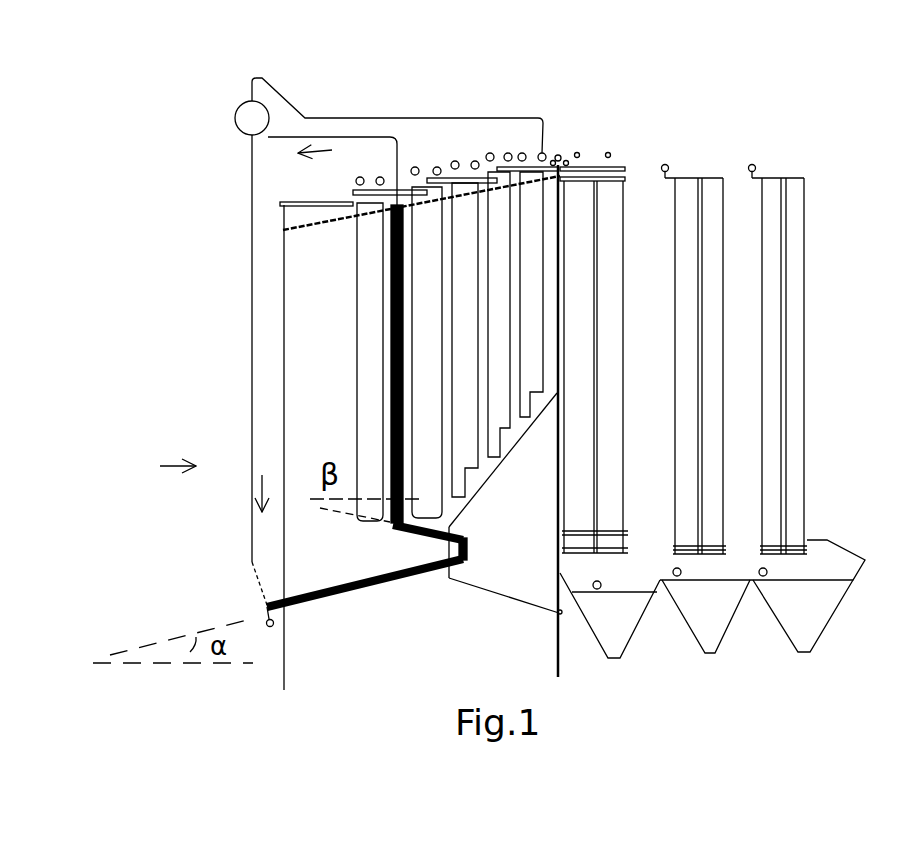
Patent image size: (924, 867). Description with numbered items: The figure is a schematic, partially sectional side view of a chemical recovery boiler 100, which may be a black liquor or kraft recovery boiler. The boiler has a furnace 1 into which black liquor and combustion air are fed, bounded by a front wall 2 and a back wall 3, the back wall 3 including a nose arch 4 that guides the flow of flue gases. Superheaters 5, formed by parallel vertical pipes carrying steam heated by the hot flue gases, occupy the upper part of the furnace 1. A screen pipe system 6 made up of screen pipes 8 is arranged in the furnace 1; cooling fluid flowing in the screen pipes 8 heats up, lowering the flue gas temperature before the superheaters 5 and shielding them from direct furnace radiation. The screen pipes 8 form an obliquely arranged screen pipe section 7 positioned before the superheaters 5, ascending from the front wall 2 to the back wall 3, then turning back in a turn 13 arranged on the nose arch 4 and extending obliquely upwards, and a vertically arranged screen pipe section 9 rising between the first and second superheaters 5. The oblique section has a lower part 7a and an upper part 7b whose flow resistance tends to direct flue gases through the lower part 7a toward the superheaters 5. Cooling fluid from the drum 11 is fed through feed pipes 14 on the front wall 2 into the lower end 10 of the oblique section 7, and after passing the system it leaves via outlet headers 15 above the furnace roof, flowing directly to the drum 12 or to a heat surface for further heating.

The chemical recovery boiler 100 is at (806, 86).
The furnace 1 is at (428, 629).
The front wall 2 is at (282, 389).
The back wall 3 is at (556, 647).
The nose arch 4 is at (535, 546).
The superheaters 5 is at (425, 225).
The screen pipe system 6 is at (229, 331).
The obliquely arranged screen pipe section 7 is at (316, 549).
The lower part of the obliquely arranged screen pipe section 7a is at (321, 603).
The upper part of the obliquely arranged screen pipe section 7b is at (396, 529).
The screen pipes 8 is at (374, 449).
The vertically arranged screen pipe section 9 is at (393, 310).
The lower end 10 is at (263, 612).
The drum 11 is at (247, 117).
The drum 12 is at (398, 204).
The turn 13 is at (470, 558).
The feed pipes 14 is at (252, 248).
The outlet headers 15 is at (379, 160).